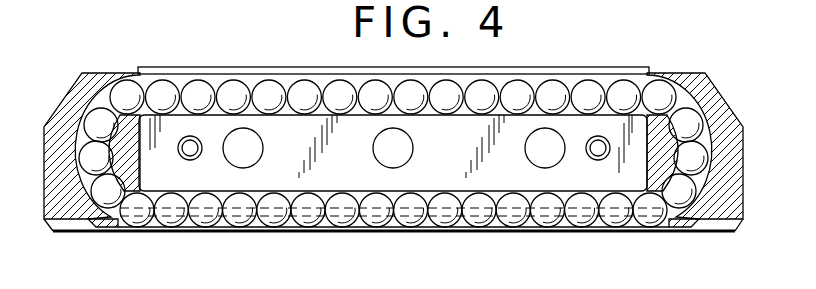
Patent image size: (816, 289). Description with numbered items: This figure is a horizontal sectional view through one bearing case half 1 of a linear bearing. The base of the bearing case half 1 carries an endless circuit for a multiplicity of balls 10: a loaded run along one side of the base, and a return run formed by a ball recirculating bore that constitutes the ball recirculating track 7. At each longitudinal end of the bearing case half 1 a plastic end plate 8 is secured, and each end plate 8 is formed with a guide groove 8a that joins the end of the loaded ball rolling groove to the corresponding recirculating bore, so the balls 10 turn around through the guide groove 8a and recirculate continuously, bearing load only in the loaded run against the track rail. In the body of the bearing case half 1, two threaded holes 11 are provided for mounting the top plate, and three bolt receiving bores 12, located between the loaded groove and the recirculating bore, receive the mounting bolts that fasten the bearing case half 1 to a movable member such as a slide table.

The bearing case half 1 is at (72, 86).
The ball recirculating track 7 is at (254, 80).
The end plate 8 is at (50, 157).
The guide groove 8a is at (79, 194).
The balls 10 is at (307, 220).
The threaded hole 11 is at (190, 152).
The bolt receiving bore 12 is at (233, 157).